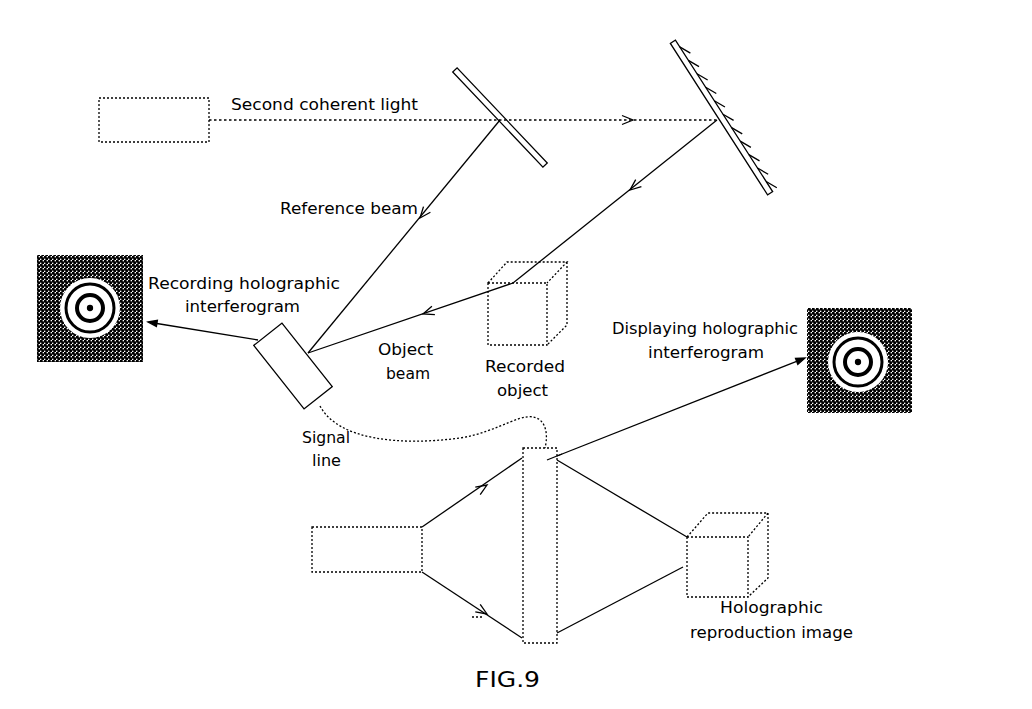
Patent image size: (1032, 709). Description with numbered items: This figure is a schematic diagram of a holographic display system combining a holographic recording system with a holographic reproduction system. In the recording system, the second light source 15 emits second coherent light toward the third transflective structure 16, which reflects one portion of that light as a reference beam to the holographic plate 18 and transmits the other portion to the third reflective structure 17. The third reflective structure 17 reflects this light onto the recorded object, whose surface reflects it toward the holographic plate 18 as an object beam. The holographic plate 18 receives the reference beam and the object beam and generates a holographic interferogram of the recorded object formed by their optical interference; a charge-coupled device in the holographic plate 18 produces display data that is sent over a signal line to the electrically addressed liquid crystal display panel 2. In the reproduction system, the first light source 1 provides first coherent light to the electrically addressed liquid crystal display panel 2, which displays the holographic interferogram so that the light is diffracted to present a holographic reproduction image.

The second light source 15 is at (167, 91).
The third transflective structure 16 is at (476, 68).
The third reflective structure 17 is at (684, 36).
The holographic plate 18 is at (274, 374).
The first light source 1 is at (341, 530).
The electrically addressed liquid crystal display panel 2 is at (562, 546).